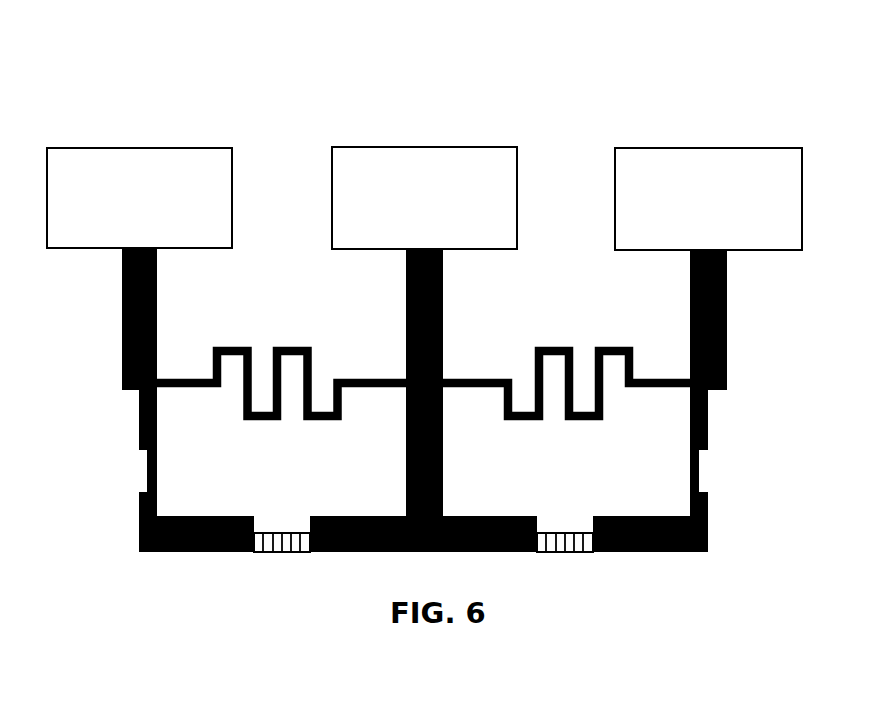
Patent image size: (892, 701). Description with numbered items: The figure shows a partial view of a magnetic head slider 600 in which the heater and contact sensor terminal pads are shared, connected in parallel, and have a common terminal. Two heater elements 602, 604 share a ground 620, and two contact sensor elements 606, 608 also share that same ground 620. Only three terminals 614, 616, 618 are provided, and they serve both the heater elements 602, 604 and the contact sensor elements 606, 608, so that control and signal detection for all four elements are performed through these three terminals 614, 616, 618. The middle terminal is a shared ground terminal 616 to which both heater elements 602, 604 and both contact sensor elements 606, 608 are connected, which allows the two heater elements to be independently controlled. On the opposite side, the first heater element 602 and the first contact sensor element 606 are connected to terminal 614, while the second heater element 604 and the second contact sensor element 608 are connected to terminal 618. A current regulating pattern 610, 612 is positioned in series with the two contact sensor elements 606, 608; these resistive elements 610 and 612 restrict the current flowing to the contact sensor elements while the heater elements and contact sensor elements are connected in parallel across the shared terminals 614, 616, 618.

The magnetic head slider 600 is at (345, 62).
The heater element 602 is at (290, 326).
The heater element 604 is at (565, 326).
The contact sensor element 606 is at (288, 523).
The contact sensor element 608 is at (570, 523).
The current regulating pattern 610 is at (126, 480).
The current regulating pattern 612 is at (727, 461).
The terminal 614 is at (139, 198).
The shared ground terminal 616 is at (424, 198).
The terminal 618 is at (708, 199).
The ground 620 is at (452, 290).